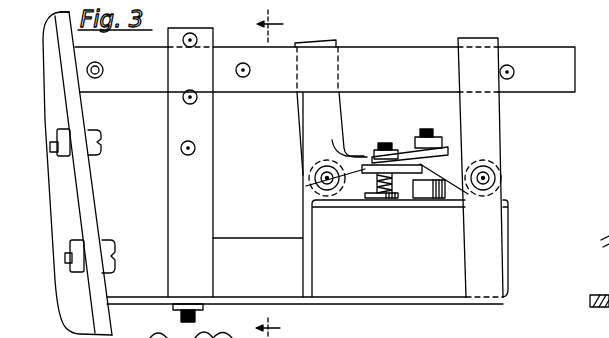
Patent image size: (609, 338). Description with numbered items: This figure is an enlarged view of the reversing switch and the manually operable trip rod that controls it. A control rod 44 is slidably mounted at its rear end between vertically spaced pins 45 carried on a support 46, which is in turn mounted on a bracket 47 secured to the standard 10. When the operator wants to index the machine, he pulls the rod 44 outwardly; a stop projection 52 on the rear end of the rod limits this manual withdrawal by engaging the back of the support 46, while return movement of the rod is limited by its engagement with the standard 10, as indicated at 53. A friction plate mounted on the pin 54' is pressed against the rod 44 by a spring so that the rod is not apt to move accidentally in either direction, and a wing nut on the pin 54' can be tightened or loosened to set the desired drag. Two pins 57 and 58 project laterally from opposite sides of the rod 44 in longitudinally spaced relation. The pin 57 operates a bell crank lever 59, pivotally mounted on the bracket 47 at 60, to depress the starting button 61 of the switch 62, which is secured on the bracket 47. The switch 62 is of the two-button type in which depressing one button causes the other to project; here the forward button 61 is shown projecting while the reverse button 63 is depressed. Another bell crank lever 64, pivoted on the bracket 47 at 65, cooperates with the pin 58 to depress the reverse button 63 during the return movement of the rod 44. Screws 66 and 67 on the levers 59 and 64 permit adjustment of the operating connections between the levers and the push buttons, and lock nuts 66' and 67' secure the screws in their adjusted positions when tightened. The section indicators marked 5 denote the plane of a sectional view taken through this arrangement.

The standard 10 is at (97, 320).
The control rod 44 is at (430, 35).
The pins 45 is at (195, 92).
The support 46 is at (200, 185).
The bracket 47 is at (318, 304).
The stop projection 52 is at (103, 72).
The engagement with the standard 53 is at (77, 58).
The pin 54' is at (218, 234).
The pin 57 is at (243, 77).
The pin 58 is at (509, 79).
The bell crank lever 59 is at (333, 117).
The pivot 60 is at (316, 180).
The starting button 61 is at (422, 199).
The switch 62 is at (445, 247).
The button 63 is at (357, 198).
The bell crank lever 64 is at (493, 138).
The pivot 65 is at (497, 178).
The screw 66 is at (428, 124).
The lock nut 66' is at (468, 122).
The screw 67 is at (410, 140).
The lock nut 67' is at (337, 139).
The section line 5 is at (272, 173).